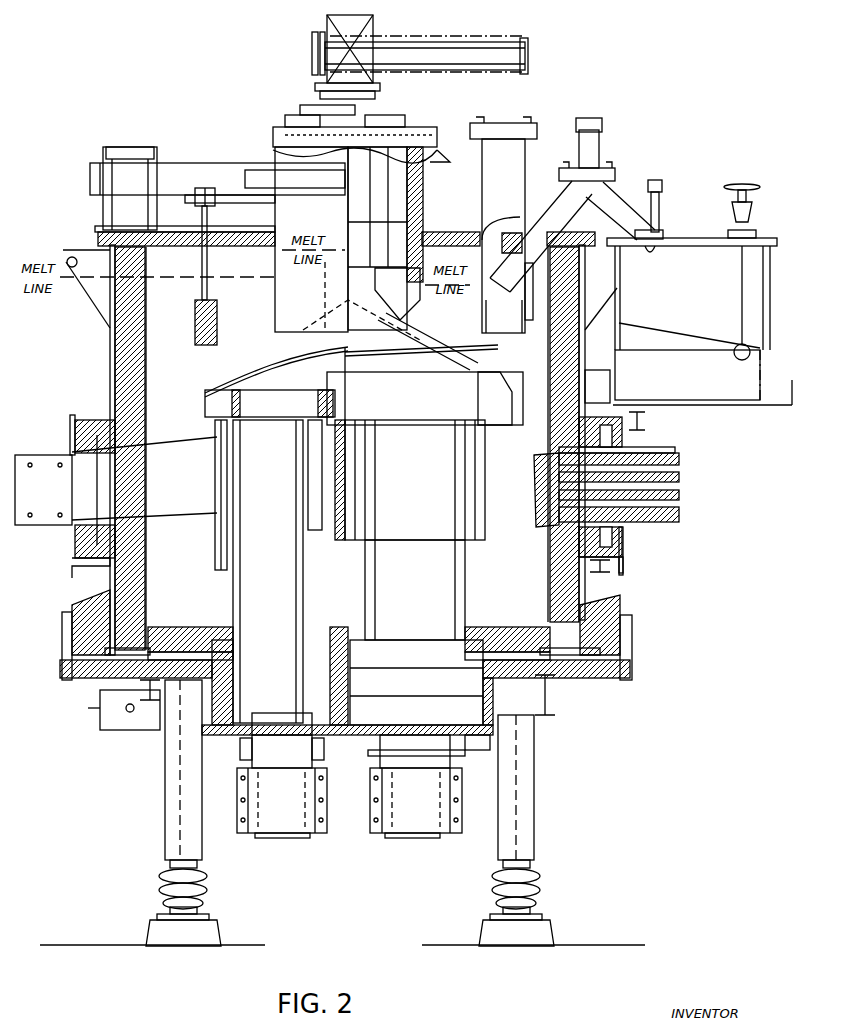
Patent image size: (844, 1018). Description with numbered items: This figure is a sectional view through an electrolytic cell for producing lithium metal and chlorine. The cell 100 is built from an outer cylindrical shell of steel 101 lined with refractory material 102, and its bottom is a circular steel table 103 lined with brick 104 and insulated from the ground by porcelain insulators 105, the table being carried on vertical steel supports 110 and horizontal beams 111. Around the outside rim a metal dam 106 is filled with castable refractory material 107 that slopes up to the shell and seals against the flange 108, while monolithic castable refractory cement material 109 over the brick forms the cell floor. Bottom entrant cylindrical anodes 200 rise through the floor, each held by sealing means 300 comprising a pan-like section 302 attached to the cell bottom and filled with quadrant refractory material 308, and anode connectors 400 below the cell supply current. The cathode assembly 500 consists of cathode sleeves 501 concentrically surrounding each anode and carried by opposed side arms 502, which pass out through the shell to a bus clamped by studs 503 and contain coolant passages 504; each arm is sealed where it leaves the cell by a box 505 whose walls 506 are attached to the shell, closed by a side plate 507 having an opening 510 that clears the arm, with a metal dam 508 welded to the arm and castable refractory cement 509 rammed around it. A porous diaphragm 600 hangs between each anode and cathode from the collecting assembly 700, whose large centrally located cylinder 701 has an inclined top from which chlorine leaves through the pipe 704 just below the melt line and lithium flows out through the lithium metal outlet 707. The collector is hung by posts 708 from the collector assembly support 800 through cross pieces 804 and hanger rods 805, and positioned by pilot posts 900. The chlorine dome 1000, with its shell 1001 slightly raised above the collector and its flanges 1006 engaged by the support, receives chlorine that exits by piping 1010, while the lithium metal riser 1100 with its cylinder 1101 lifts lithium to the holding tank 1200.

The cell structure 100 is at (108, 372).
The outer cylindrical shell of steel 101 is at (144, 390).
The refractory material 102 is at (108, 240).
The circular steel table 103 is at (78, 678).
The brick 104 is at (148, 645).
The porcelain insulators 105 is at (200, 875).
The metal dam 106 is at (62, 632).
The castable refractory material 107 is at (82, 604).
The flange 108 is at (105, 651).
The castable refractory cement material 109 is at (190, 628).
The vertical steel supports 110 is at (170, 842).
The horizontal beams 111 is at (108, 226).
The anode 200 is at (228, 567).
The sealing means 300 is at (245, 745).
The box or pan-like section 302 is at (165, 732).
The refractory material 308 is at (233, 682).
The anode connectors 400 is at (232, 815).
The cathode assembly 500 is at (490, 530).
The cathode sleeve 501 is at (215, 525).
The side arms 502 is at (679, 462).
The studs 503 is at (665, 522).
The passages 504 is at (679, 495).
The box 505 is at (630, 437).
The walls 506 is at (646, 420).
The side plate 507 is at (622, 572).
The metal dam 508 is at (96, 440).
The castable refractory cement 509 is at (675, 450).
The opening 510 is at (612, 532).
The porous diaphragm 600 is at (200, 414).
The collecting assembly 700 is at (272, 352).
The large centrally located cylinder 701 is at (523, 398).
The pipe 704 is at (378, 310).
The lithium metal outlet 707 is at (503, 348).
The posts 708 is at (195, 340).
The collector assembly support 800 is at (178, 160).
The cross pieces 804 is at (216, 200).
The hanger rods 805 is at (208, 258).
The pilot posts 900 is at (100, 150).
The chlorine dome 1000 is at (440, 124).
The shell 1001 is at (426, 302).
The flanges 1006 is at (442, 158).
The piping 1010 is at (312, 42).
The lithium metal riser 1100 is at (542, 124).
The cylinder 1101 is at (483, 318).
The holding tank 1200 is at (668, 226).